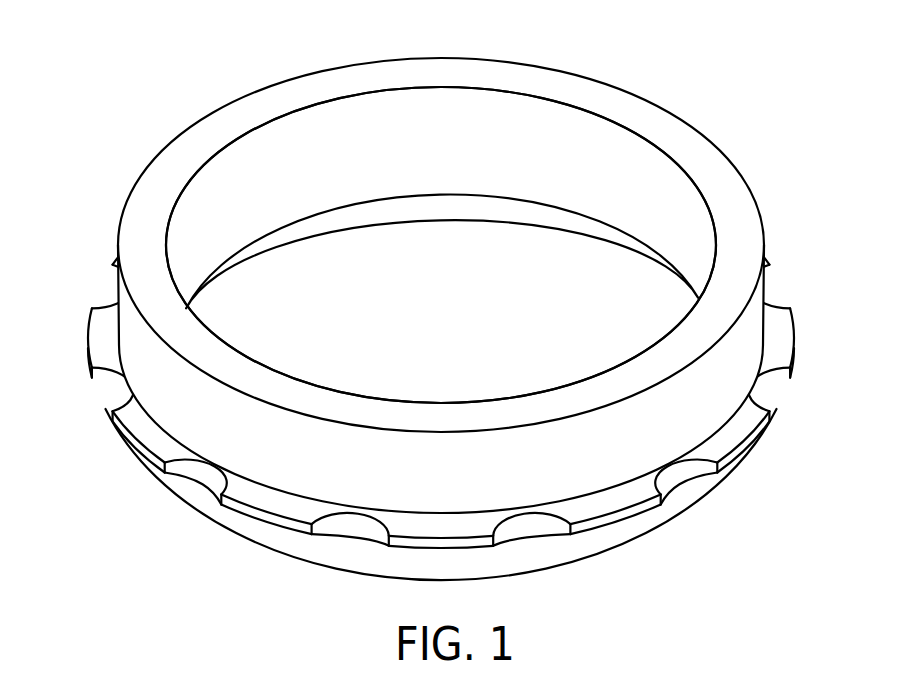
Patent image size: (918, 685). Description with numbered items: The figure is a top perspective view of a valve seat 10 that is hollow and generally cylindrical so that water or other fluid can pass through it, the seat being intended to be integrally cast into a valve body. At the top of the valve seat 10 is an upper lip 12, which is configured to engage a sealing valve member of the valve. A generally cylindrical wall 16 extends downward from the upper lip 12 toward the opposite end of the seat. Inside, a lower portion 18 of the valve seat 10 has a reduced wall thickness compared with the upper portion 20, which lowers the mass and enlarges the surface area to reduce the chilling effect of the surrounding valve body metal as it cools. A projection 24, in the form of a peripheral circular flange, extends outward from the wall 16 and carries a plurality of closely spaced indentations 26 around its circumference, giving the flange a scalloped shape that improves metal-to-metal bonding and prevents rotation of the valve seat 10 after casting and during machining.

The valve seat 10 is at (103, 124).
The upper lip 12 is at (193, 142).
The wall 16 is at (703, 408).
The lower portion 18 is at (365, 213).
The upper portion 20 is at (378, 125).
The projection 24 is at (152, 427).
The indentations 26 is at (106, 380).